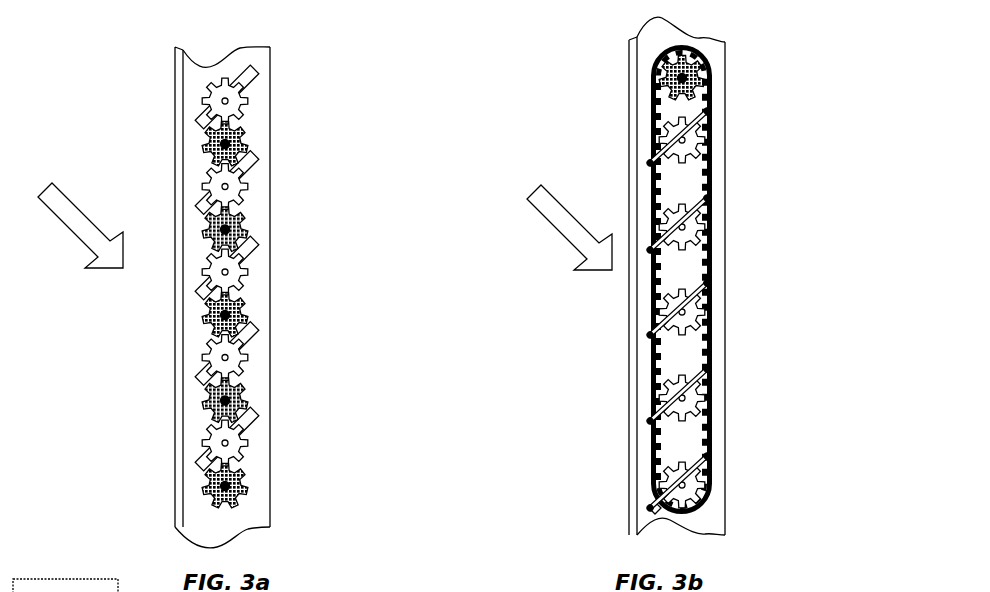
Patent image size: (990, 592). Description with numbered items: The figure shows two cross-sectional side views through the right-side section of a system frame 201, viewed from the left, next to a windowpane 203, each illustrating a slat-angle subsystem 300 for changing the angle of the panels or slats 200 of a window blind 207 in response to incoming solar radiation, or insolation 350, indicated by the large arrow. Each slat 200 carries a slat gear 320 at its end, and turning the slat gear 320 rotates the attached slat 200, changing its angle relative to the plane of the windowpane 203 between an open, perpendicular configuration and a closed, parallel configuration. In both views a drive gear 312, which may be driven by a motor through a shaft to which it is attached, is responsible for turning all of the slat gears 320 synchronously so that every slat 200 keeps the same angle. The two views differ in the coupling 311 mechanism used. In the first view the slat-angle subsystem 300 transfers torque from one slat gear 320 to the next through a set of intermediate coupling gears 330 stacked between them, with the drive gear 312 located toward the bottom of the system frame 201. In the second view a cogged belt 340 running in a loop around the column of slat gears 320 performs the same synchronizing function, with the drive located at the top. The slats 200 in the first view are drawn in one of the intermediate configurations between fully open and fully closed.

In FIG. 3a, the slats 200 is at (248, 88).
In FIG. 3b, the slats 200 is at (662, 161).
In FIG. 3a, the system frame 201 is at (272, 82).
In FIG. 3b, the system frame 201 is at (727, 62).
In FIG. 3a, the windowpane 203 is at (173, 147).
In FIG. 3b, the windowpane 203 is at (628, 128).
In FIG. 3a, the window blind 207 is at (160, 297).
In FIG. 3b, the window blind 207 is at (611, 276).
In FIG. 3a, the slat-angle subsystem 300 is at (193, 430).
In FIG. 3b, the slat-angle subsystem 300 is at (642, 453).
In FIG. 3a, the coupling mechanism 311 is at (319, 280).
In FIG. 3b, the coupling mechanism 311 is at (607, 280).
In FIG. 3a, the drive gear 312 is at (247, 500).
In FIG. 3a, the slat gear 320 is at (253, 80).
In FIG. 3b, the slat gear 320 is at (705, 143).
In FIG. 3a, the intermediate coupling gears 330 is at (247, 146).
In FIG. 3b, the intermediate coupling gears 330 is at (705, 104).
In FIG. 3b, the cogged belt 340 is at (655, 425).
In FIG. 3a, the insolation 350 is at (112, 270).
In FIG. 3b, the insolation 350 is at (578, 263).